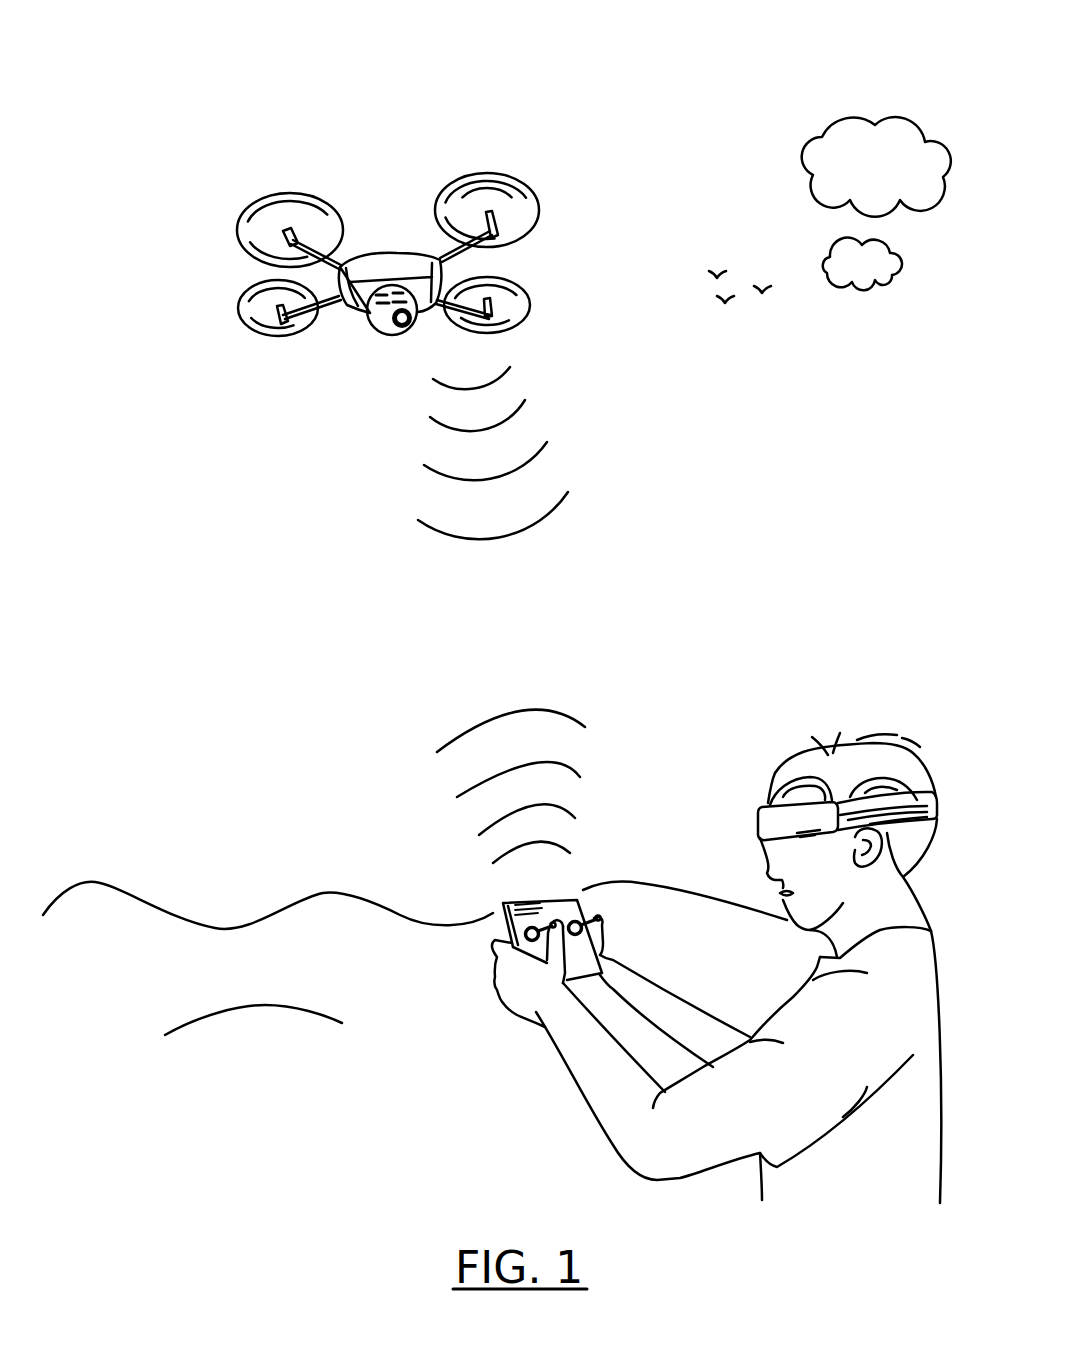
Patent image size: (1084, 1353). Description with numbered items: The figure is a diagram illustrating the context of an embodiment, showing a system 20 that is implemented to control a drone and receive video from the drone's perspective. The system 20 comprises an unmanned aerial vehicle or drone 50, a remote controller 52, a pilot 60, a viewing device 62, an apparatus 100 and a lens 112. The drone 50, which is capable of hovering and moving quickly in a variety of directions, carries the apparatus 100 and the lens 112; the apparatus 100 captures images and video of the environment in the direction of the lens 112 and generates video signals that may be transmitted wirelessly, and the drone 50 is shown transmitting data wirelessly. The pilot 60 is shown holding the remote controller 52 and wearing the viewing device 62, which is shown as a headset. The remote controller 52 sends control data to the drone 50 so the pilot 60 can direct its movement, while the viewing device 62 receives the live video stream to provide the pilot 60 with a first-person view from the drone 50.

The system 20 is at (430, 38).
The unmanned aerial vehicle 50 is at (266, 196).
The remote controller 52 is at (503, 902).
The pilot 60 is at (907, 747).
The viewing device 62 is at (762, 806).
The apparatus 100 is at (383, 297).
The lens 112 is at (386, 321).